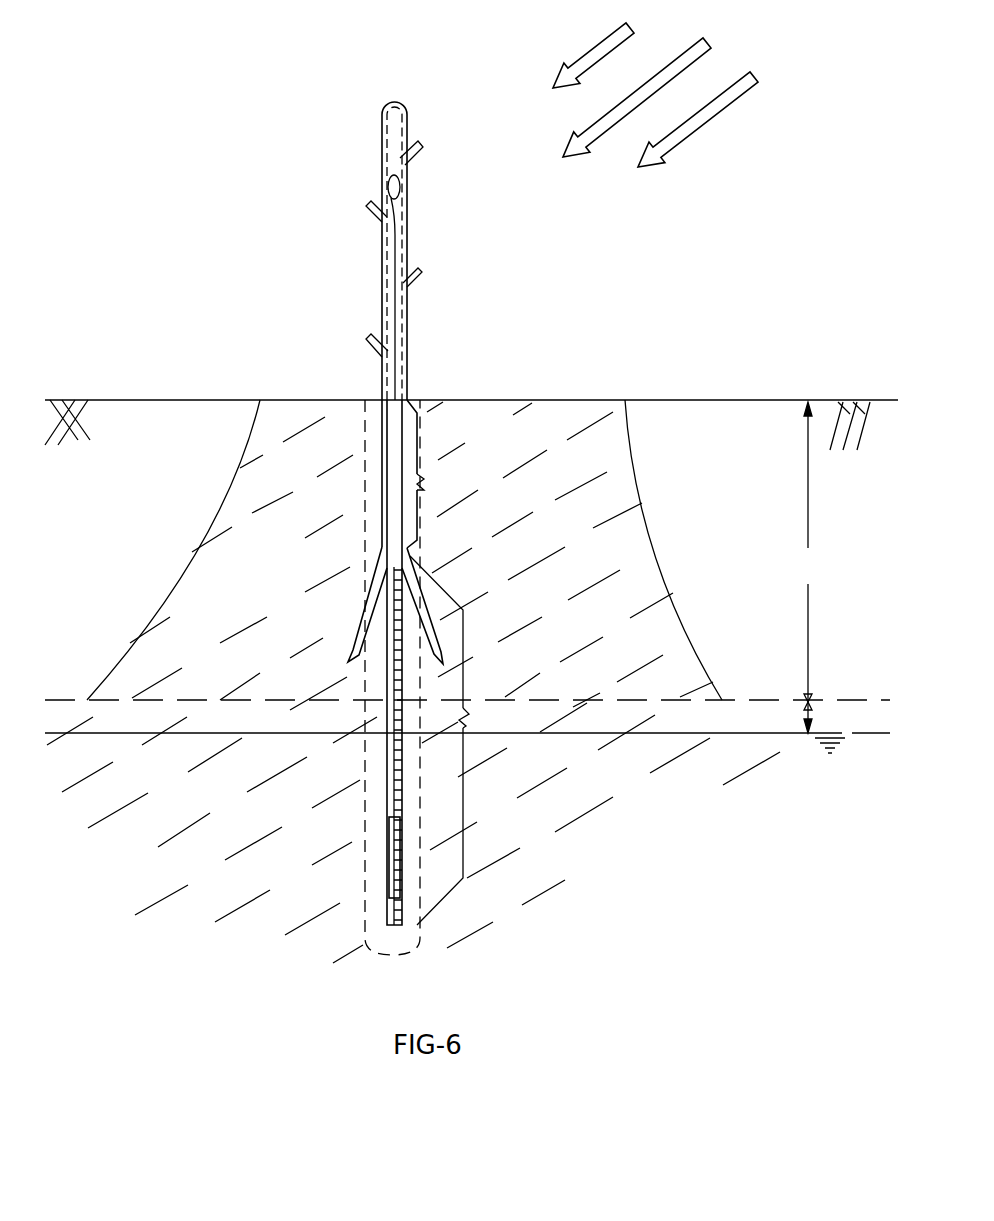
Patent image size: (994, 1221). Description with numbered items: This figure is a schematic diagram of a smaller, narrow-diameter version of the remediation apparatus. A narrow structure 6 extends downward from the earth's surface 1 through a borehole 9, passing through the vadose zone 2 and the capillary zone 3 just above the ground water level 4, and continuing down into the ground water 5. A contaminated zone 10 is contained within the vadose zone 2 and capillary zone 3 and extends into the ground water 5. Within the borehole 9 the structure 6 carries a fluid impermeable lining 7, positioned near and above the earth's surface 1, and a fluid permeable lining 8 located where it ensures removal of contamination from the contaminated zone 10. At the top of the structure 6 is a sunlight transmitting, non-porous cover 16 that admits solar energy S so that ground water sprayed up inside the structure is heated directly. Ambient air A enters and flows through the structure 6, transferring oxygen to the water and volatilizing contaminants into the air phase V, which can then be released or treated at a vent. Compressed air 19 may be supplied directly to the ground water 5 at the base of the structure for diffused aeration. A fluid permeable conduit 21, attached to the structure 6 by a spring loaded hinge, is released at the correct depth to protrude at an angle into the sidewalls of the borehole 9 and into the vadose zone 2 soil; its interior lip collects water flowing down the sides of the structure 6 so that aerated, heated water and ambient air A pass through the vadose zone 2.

The earth's surface 1 is at (67, 392).
The vadose zone 2 is at (808, 567).
The capillary zone 3 is at (804, 707).
The ground water level 4 is at (838, 730).
The ground water 5 is at (693, 798).
The structure 6 is at (360, 511).
The fluid impermeable lining 7 is at (429, 677).
The fluid permeable lining 8 is at (429, 482).
The borehole 9 is at (423, 445).
The contaminated zone 10 is at (307, 525).
The sunlight transmitting, non-porous cover 16 is at (384, 140).
The compressed air 19 is at (382, 876).
The fluid permeable conduit 21 is at (348, 629).
The solar energy S is at (663, 88).
The volatilization V is at (406, 160).
The ambient air A is at (362, 337).